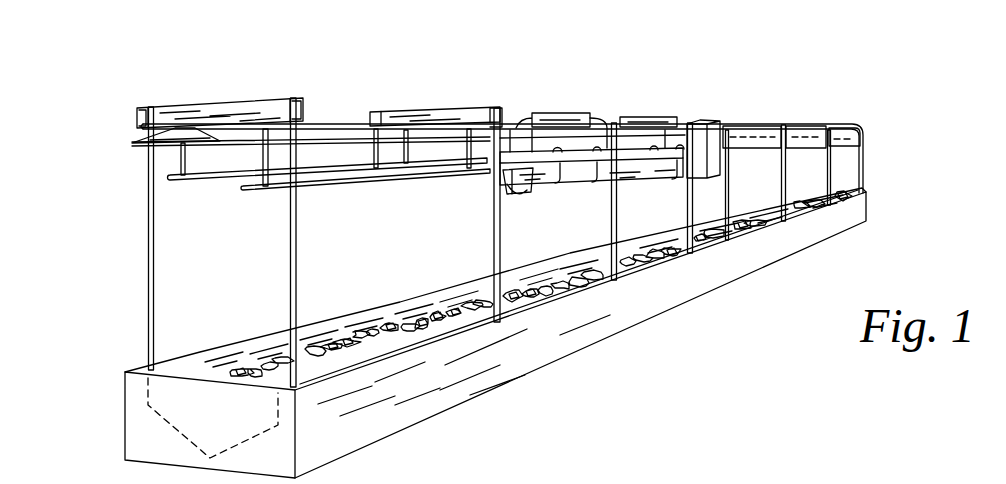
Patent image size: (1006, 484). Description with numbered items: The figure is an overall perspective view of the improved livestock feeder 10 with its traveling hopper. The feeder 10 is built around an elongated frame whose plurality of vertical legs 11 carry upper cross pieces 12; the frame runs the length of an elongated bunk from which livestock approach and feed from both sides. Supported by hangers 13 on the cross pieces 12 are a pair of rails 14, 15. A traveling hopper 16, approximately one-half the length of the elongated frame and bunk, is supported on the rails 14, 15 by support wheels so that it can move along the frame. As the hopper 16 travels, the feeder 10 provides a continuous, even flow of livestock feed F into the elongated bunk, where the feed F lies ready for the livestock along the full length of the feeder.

The livestock feeder 10 is at (812, 99).
The vertical legs 11 is at (152, 254).
The upper cross pieces 12 is at (232, 117).
The hangers 13 is at (188, 153).
The rail 14 is at (311, 173).
The rail 15 is at (412, 171).
The traveling hopper 16 is at (638, 167).
The livestock feed F is at (420, 338).